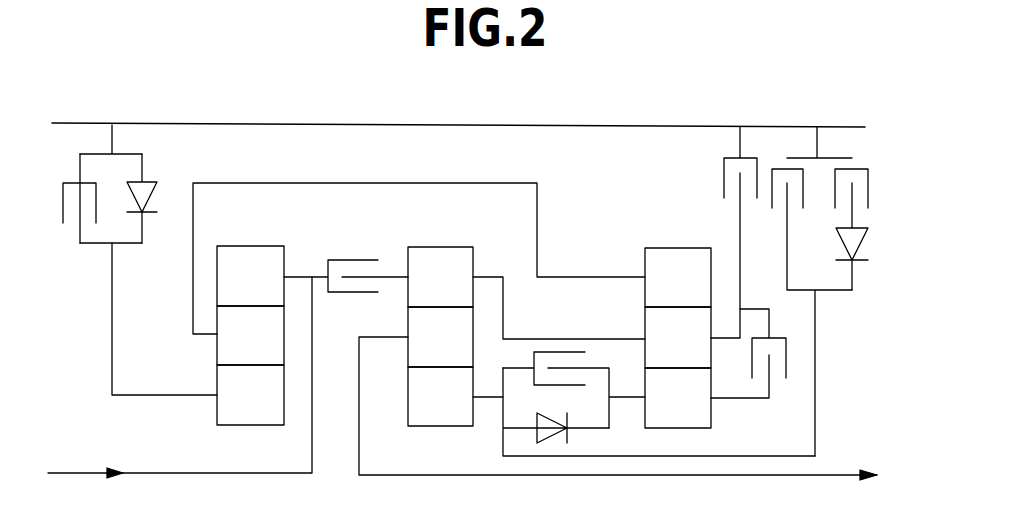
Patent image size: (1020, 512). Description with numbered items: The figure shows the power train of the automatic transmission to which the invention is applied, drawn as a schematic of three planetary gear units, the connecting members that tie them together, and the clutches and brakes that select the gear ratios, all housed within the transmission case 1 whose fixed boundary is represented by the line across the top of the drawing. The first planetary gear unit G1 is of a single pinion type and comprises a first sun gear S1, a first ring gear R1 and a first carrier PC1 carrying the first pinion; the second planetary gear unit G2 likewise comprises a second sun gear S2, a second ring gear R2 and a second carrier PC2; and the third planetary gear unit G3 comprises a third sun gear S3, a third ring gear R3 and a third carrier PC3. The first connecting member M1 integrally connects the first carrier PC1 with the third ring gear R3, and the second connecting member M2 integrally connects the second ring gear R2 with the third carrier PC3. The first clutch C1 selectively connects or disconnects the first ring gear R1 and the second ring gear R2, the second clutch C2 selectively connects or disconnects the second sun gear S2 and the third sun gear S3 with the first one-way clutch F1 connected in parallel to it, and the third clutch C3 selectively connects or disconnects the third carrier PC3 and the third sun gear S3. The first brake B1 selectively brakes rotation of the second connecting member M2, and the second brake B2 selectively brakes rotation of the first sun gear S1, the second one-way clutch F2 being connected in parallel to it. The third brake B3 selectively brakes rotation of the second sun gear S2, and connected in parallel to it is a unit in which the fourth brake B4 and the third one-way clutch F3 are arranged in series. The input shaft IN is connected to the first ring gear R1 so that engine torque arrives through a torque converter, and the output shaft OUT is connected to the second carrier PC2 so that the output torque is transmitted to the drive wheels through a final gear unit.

The transmission case 1 is at (772, 127).
The first brake B1 is at (730, 232).
The second brake B2 is at (130, 260).
The third brake B3 is at (802, 291).
The fourth brake B4 is at (867, 198).
The first one-way clutch F1 is at (659, 412).
The second one-way clutch F2 is at (152, 198).
The third one-way clutch F3 is at (866, 259).
The first clutch C1 is at (346, 265).
The second clutch C2 is at (559, 383).
The third clutch C3 is at (748, 369).
The first planetary gear unit G1 is at (250, 310).
The second planetary gear unit G2 is at (440, 312).
The third planetary gear unit G3 is at (678, 313).
The first connecting member M1 is at (323, 183).
The second connecting member M2 is at (489, 277).
The first ring gear R1 is at (250, 276).
The first carrier PC1 is at (250, 335).
The first sun gear S1 is at (250, 395).
The second ring gear R2 is at (440, 277).
The second carrier PC2 is at (440, 337).
The second sun gear S2 is at (440, 396).
The third ring gear R3 is at (678, 277).
The third carrier PC3 is at (678, 337).
The third sun gear S3 is at (678, 398).
The input shaft IN is at (168, 473).
The output shaft OUT is at (825, 475).